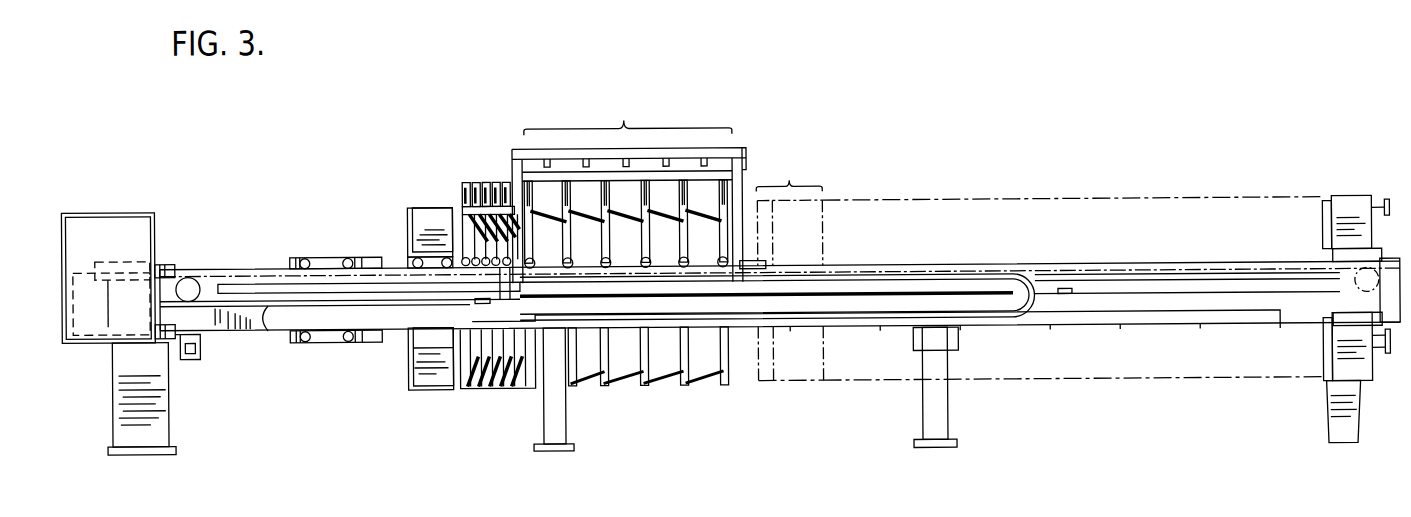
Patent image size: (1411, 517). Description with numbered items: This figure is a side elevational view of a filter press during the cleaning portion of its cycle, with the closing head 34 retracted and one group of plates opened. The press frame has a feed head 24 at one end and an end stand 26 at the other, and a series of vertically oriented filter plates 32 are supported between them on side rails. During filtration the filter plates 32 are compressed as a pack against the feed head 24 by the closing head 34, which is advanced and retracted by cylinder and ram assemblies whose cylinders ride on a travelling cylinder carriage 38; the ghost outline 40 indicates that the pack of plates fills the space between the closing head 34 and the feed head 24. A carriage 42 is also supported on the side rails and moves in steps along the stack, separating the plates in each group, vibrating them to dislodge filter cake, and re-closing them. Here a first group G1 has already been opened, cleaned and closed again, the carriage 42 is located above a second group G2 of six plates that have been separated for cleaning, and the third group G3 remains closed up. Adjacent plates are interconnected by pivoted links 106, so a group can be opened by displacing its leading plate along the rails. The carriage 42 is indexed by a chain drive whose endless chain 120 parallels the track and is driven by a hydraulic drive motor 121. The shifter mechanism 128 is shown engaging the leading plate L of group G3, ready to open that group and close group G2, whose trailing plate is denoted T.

The feed head 24 is at (1352, 200).
The end stand 26 is at (166, 261).
The filter plates 32 is at (480, 387).
The closing head 34 is at (425, 223).
The travelling cylinder carriage 38 is at (322, 248).
The ghost outline 40 is at (1158, 203).
The carriage 42 is at (710, 148).
The pivoted links 106 is at (590, 381).
The endless chain 120 is at (260, 302).
The hydraulic drive motor 121 is at (200, 357).
The shifter mechanism 128 is at (780, 253).
The first group of filter plates G1 is at (488, 176).
The second group of filter plates G2 is at (628, 108).
The third group of filter plates G3 is at (789, 168).
The trailing plate T is at (727, 397).
The leading plate L is at (767, 388).